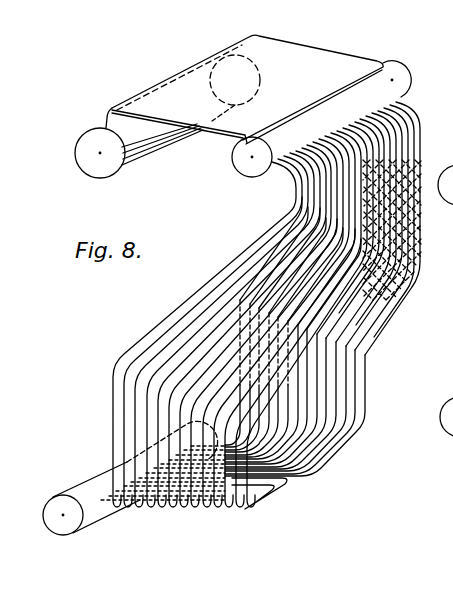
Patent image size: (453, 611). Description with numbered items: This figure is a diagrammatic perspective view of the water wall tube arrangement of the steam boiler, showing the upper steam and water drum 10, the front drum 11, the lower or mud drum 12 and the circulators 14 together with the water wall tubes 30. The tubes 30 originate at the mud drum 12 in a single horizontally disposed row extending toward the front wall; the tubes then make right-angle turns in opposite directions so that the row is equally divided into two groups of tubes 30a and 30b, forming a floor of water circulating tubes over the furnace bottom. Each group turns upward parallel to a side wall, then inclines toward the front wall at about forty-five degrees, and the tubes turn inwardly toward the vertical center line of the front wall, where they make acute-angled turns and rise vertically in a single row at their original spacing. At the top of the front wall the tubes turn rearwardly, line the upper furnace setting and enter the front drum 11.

The upper steam and water drum 10 is at (82, 135).
The front drum 11 is at (405, 67).
The lower or mud drum 12 is at (58, 535).
The circulators 14 is at (210, 131).
The water wall tubes 30 is at (409, 102).
The first group of tubes 30a is at (262, 503).
The second group of tubes 30b is at (338, 458).